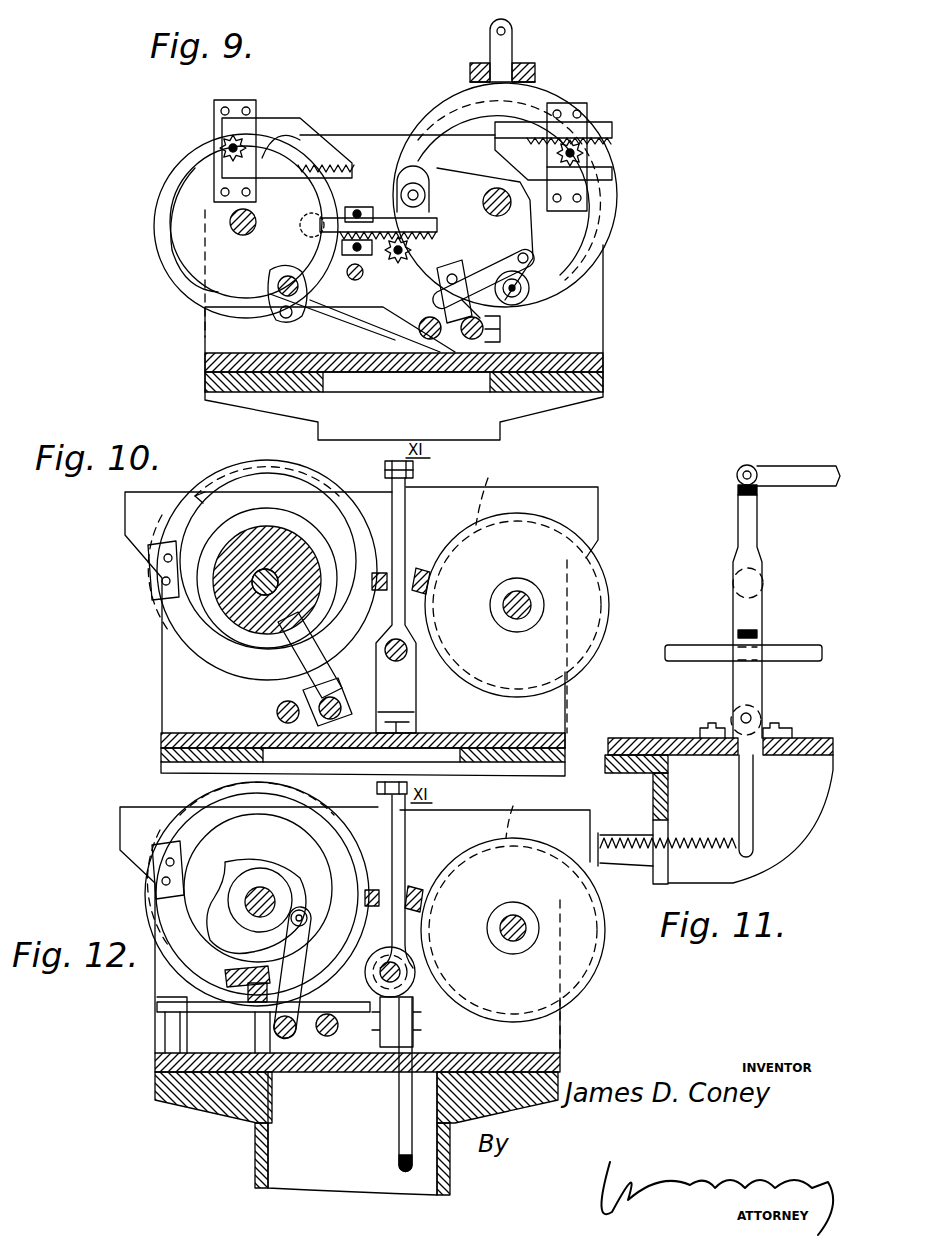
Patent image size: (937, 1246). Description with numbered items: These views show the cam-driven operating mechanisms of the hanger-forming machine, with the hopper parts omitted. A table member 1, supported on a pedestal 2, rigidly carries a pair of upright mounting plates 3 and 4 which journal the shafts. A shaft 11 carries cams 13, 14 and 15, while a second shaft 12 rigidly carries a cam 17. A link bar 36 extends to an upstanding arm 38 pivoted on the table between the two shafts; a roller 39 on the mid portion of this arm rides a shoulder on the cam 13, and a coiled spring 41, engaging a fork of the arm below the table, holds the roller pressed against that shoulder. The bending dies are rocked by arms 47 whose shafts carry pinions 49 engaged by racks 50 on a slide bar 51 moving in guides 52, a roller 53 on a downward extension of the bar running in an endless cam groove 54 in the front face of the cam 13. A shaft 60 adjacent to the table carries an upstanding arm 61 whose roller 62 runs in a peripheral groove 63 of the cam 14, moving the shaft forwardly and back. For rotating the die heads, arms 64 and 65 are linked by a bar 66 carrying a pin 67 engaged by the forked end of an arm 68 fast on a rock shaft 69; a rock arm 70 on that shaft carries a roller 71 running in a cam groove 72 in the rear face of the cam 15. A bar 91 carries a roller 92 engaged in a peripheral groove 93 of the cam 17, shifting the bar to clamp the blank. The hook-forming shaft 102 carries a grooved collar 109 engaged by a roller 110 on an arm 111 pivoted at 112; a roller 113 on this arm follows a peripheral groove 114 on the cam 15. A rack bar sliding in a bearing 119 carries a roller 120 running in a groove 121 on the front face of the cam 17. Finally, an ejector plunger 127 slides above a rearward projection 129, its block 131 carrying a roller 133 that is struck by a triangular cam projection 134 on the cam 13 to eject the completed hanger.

In FIG. 9, the table member 1 is at (592, 368).
In FIG. 10, the table member 1 is at (566, 746).
In FIG. 11, the table member 1 is at (648, 742).
In FIG. 12, the table member 1 is at (561, 1063).
In FIG. 9, the pedestal 2 is at (500, 430).
In FIG. 11, the pedestal 2 is at (652, 800).
In FIG. 12, the pedestal 2 is at (256, 1140).
In FIG. 10, the mounting plate 3 is at (588, 528).
In FIG. 12, the mounting plate 3 is at (561, 1024).
In FIG. 9, the mounting plate 4 is at (604, 298).
In FIG. 9, the shaft 11 is at (483, 208).
In FIG. 10, the shaft 11 is at (250, 588).
In FIG. 12, the shaft 11 is at (274, 892).
In FIG. 9, the shaft 12 is at (256, 220).
In FIG. 10, the shaft 12 is at (518, 590).
In FIG. 12, the shaft 12 is at (517, 912).
In FIG. 9, the cam 13 is at (617, 200).
In FIG. 10, the cam 13 is at (219, 478).
In FIG. 12, the cam 13 is at (194, 808).
In FIG. 10, the cam 14 is at (292, 532).
In FIG. 12, the cam 15 is at (238, 977).
In FIG. 9, the cam 17 is at (165, 250).
In FIG. 10, the cam 17 is at (607, 598).
In FIG. 12, the cam 17 is at (604, 957).
In FIG. 10, the link bar 36 is at (393, 464).
In FIG. 11, the link bar 36 is at (777, 462).
In FIG. 12, the link bar 36 is at (403, 808).
In FIG. 10, the upstanding arm 38 is at (406, 524).
In FIG. 11, the upstanding arm 38 is at (761, 530).
In FIG. 12, the upstanding arm 38 is at (396, 859).
In FIG. 10, the roller 39 is at (374, 560).
In FIG. 11, the roller 39 is at (762, 580).
In FIG. 12, the roller 39 is at (372, 860).
In FIG. 11, the coiled spring 41 is at (697, 845).
In FIG. 9, the rock arm 47 is at (220, 147).
In FIG. 9, the pinion 49 is at (585, 156).
In FIG. 9, the rack 50 is at (278, 155).
In FIG. 9, the bar 51 is at (362, 130).
In FIG. 9, the guide 52 is at (220, 124).
In FIG. 9, the roller 53 is at (411, 140).
In FIG. 9, the endless cam groove 54 is at (447, 108).
In FIG. 9, the shaft 60 is at (431, 342).
In FIG. 10, the shaft 60 is at (340, 698).
In FIG. 12, the shaft 60 is at (330, 1038).
In FIG. 10, the upstanding arm 61 is at (314, 644).
In FIG. 10, the roller 62 is at (264, 654).
In FIG. 10, the endless groove 63 is at (232, 627).
In FIG. 9, the arm 64 is at (275, 312).
In FIG. 9, the arm 65 is at (532, 270).
In FIG. 9, the bar 66 is at (379, 266).
In FIG. 9, the pin 67 is at (446, 262).
In FIG. 9, the arm 68 is at (470, 278).
In FIG. 9, the rock shaft 69 is at (472, 344).
In FIG. 10, the rock shaft 69 is at (276, 718).
In FIG. 12, the rock shaft 69 is at (290, 1040).
In FIG. 12, the rock arm 70 is at (311, 924).
In FIG. 12, the roller 71 is at (246, 950).
In FIG. 12, the endless cam groove 72 is at (255, 858).
In FIG. 10, the bar 91 is at (427, 565).
In FIG. 12, the bar 91 is at (427, 868).
In FIG. 10, the roller 92 is at (455, 585).
In FIG. 12, the roller 92 is at (436, 907).
In FIG. 10, the endless cam groove 93 is at (488, 490).
In FIG. 12, the endless cam groove 93 is at (517, 811).
In FIG. 9, the shaft 102 is at (316, 322).
In FIG. 11, the shaft 102 is at (790, 650).
In FIG. 12, the grooved collar 109 is at (416, 970).
In FIG. 12, the roller 110 is at (411, 998).
In FIG. 12, the arm 111 is at (222, 1012).
In FIG. 12, the pivot 112 is at (147, 1027).
In FIG. 12, the roller 113 is at (262, 1002).
In FIG. 12, the endless cam groove 114 is at (162, 1003).
In FIG. 9, the bearing 119 is at (355, 206).
In FIG. 9, the roller 120 is at (290, 246).
In FIG. 9, the endless cam groove 121 is at (208, 278).
In FIG. 9, the plunger 127 is at (506, 28).
In FIG. 9, the rearward projection 129 is at (538, 70).
In FIG. 9, the block 131 is at (513, 56).
In FIG. 9, the roller 133 is at (538, 82).
In FIG. 10, the triangular cam projection 134 is at (150, 575).
In FIG. 12, the triangular cam projection 134 is at (145, 887).